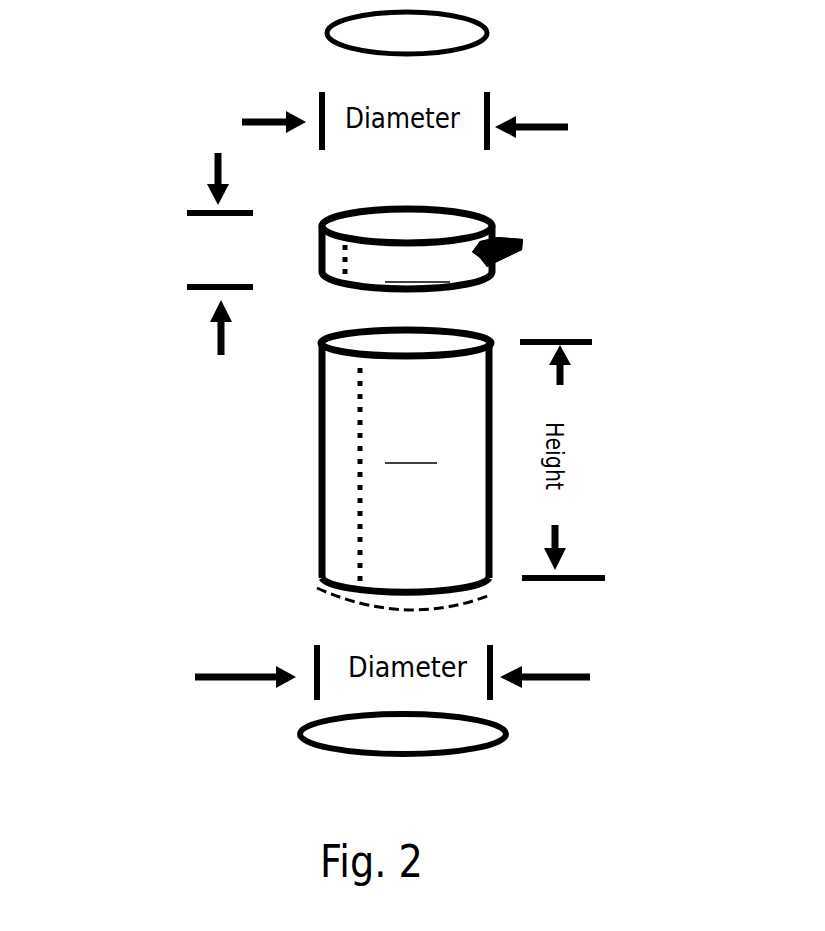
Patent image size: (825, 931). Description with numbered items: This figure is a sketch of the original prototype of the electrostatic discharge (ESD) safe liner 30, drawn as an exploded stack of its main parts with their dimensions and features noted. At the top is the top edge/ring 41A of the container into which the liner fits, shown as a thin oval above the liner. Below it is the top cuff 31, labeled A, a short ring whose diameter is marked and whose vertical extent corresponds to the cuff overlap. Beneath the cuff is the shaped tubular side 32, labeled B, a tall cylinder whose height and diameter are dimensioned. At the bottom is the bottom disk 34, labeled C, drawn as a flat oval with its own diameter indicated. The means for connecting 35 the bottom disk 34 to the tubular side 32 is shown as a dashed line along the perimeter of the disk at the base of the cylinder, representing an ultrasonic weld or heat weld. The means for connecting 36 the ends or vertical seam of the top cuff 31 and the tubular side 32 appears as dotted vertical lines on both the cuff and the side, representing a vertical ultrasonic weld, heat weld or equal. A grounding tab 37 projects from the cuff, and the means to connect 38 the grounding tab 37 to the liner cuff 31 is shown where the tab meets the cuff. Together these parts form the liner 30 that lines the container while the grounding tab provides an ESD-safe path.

The electrostatic discharge safe liner 30 is at (168, 600).
The top cuff 31 is at (289, 249).
The shaped tubular side 32 is at (289, 461).
The bottom disk 34 is at (323, 743).
The means for connecting bottom disk to tubular side 35 is at (317, 592).
The means for connecting ends or vertical seam 36 is at (352, 408).
The grounding tab 37 is at (523, 242).
The means to connect grounding tab 38 is at (500, 237).
The top edge/ring of container 41A is at (360, 27).